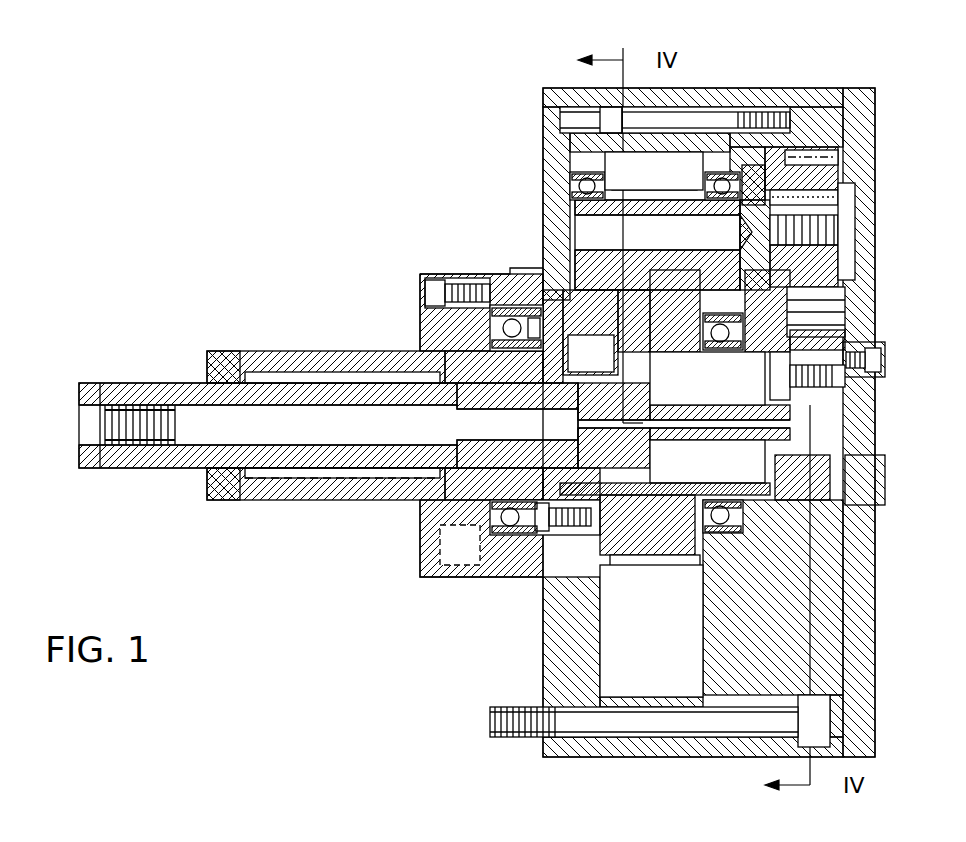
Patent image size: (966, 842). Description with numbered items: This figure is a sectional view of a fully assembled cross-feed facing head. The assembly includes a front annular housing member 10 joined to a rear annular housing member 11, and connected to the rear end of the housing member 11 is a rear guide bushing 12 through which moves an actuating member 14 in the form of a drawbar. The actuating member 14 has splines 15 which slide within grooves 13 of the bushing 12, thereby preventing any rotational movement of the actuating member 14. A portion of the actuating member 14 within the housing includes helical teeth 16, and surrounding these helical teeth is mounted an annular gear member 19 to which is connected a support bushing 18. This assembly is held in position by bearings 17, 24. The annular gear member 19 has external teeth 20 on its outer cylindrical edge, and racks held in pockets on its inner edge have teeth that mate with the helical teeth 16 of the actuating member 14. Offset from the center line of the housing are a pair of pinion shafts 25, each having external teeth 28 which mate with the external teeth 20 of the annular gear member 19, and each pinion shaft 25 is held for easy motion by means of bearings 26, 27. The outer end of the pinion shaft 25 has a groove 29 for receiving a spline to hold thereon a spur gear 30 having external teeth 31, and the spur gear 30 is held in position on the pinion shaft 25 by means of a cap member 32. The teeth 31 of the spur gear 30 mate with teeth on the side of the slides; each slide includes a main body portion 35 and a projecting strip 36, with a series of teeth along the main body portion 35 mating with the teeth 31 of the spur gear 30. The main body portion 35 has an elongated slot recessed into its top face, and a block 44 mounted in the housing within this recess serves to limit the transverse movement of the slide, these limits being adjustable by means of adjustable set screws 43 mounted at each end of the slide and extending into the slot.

The front annular housing member 10 is at (733, 678).
The rear annular housing member 11 is at (598, 757).
The rear guide bushing 12 is at (385, 500).
The grooves 13 is at (362, 352).
The actuating member 14 is at (122, 383).
The splines 15 is at (292, 478).
The helical teeth 16 is at (448, 360).
The bearing 17 is at (500, 292).
The support bushing 18 is at (565, 312).
The annular gear member 19 is at (548, 578).
The external teeth 20 is at (650, 568).
The bearing 24 is at (845, 295).
The pinion shaft 25 is at (743, 180).
The bearing 26 is at (578, 168).
The bearing 27 is at (720, 178).
The external teeth 28 is at (600, 120).
The groove 29 is at (840, 203).
The spur gear 30 is at (838, 160).
The external teeth 31 is at (842, 157).
The cap member 32 is at (845, 232).
The slide main body portion 35 is at (847, 335).
The projecting strip 36 is at (885, 348).
The adjustable set screws 43 is at (880, 450).
The block 44 is at (835, 383).